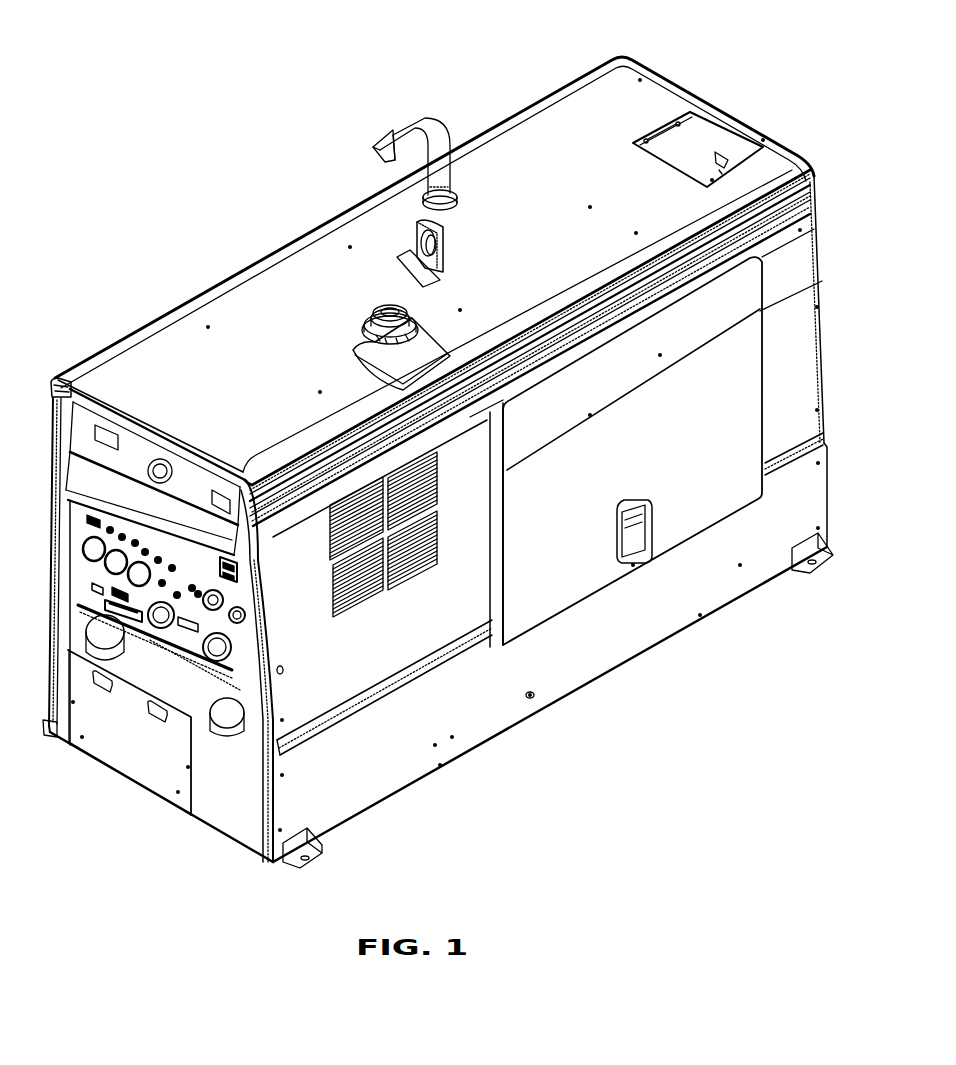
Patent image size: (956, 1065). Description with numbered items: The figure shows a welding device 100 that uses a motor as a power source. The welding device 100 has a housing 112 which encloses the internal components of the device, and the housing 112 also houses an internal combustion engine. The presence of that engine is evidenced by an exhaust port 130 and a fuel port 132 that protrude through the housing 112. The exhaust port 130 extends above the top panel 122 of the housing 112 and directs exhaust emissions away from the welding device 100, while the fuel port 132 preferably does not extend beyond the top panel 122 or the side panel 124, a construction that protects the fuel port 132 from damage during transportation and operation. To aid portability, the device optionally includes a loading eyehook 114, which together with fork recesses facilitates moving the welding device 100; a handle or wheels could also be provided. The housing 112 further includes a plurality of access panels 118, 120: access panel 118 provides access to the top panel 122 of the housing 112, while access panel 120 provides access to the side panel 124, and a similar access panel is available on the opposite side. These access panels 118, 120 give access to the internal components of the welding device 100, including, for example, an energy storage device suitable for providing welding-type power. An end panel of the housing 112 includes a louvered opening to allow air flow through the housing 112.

The welding device 100 is at (745, 36).
The housing 112 is at (176, 303).
The loading eyehook 114 is at (420, 227).
The access panel 118 is at (702, 155).
The access panel 120 is at (650, 461).
The top panel 122 is at (568, 223).
The side panel 124 is at (412, 636).
The exhaust port 130 is at (407, 127).
The fuel port 132 is at (345, 327).